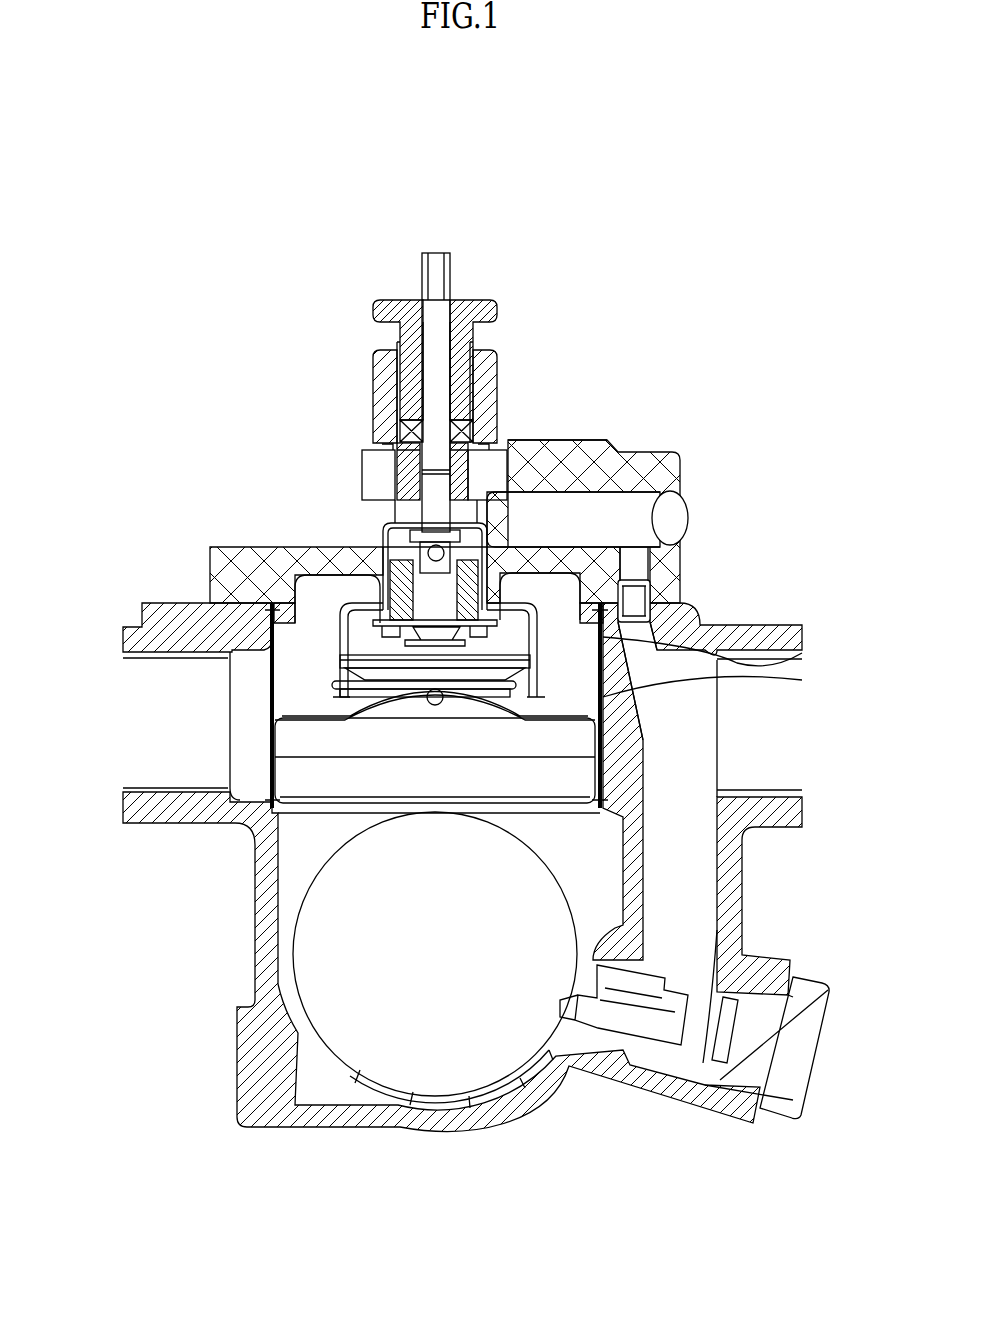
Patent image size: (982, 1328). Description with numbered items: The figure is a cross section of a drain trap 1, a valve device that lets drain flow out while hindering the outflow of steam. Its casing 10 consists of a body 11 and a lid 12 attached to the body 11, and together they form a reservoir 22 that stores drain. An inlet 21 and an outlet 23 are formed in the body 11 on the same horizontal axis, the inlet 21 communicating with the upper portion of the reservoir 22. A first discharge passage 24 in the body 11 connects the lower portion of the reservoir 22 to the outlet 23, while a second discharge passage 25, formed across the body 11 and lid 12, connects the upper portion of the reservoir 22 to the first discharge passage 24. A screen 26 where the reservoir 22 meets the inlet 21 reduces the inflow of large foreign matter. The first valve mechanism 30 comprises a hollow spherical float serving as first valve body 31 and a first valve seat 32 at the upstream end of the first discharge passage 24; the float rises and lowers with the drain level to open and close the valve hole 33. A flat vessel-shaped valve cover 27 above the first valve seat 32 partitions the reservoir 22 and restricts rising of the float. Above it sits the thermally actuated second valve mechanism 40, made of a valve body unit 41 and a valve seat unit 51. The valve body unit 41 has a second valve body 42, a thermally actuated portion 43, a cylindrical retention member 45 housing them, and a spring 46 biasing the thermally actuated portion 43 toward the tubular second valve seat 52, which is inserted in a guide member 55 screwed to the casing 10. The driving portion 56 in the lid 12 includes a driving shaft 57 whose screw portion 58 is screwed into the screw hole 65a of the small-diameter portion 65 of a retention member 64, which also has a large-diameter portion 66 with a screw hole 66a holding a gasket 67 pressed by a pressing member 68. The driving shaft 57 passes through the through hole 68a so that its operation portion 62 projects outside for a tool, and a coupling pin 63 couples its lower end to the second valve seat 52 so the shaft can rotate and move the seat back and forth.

The drain trap 1 is at (232, 257).
The casing 10 is at (776, 525).
The body 11 is at (730, 620).
The lid 12 is at (685, 570).
The inlet 21 is at (140, 705).
The reservoir 22 is at (297, 850).
The outlet 23 is at (780, 740).
The first discharge passage 24 is at (685, 865).
The second discharge passage 25 is at (648, 500).
The screen 26 is at (280, 655).
The valve cover 27 is at (310, 700).
The first valve mechanism 30 is at (600, 925).
The first valve body 31 is at (495, 1100).
The first valve seat 32 is at (565, 1020).
The valve hole 33 is at (650, 1025).
The second valve mechanism 40 is at (312, 608).
The valve body unit 41 is at (700, 510).
The second valve body 42 is at (300, 625).
The thermally actuated portion 43 is at (345, 670).
The retention member 45 is at (735, 670).
The spring 46 is at (720, 690).
The valve seat unit 51 is at (370, 415).
The second valve seat 52 is at (400, 518).
The guide member 55 is at (605, 450).
The driving portion 56 is at (453, 264).
The driving shaft 57 is at (440, 325).
The screw portion 58 is at (460, 455).
The operation portion 62 is at (432, 258).
The coupling pin 63 is at (430, 485).
The retention member 64 is at (392, 385).
The small-diameter portion 65 is at (465, 468).
The screw hole 65a is at (384, 445).
The large-diameter portion 66 is at (478, 395).
The screw hole 66a is at (392, 355).
The gasket 67 is at (452, 435).
The pressing member 68 is at (385, 305).
The through hole 68a is at (455, 345).